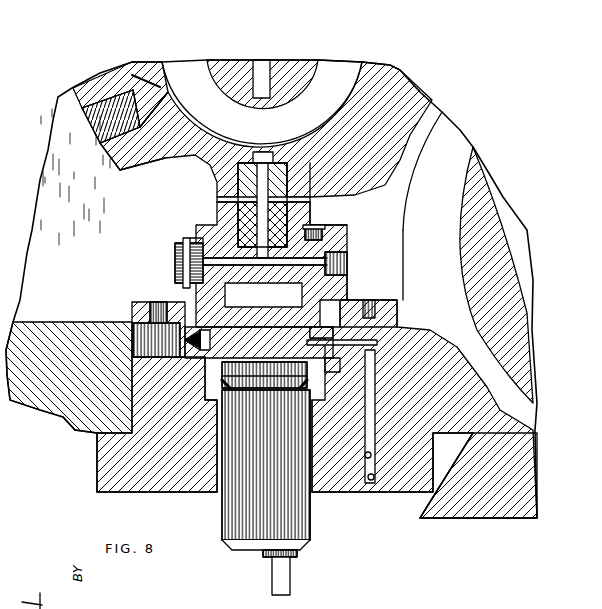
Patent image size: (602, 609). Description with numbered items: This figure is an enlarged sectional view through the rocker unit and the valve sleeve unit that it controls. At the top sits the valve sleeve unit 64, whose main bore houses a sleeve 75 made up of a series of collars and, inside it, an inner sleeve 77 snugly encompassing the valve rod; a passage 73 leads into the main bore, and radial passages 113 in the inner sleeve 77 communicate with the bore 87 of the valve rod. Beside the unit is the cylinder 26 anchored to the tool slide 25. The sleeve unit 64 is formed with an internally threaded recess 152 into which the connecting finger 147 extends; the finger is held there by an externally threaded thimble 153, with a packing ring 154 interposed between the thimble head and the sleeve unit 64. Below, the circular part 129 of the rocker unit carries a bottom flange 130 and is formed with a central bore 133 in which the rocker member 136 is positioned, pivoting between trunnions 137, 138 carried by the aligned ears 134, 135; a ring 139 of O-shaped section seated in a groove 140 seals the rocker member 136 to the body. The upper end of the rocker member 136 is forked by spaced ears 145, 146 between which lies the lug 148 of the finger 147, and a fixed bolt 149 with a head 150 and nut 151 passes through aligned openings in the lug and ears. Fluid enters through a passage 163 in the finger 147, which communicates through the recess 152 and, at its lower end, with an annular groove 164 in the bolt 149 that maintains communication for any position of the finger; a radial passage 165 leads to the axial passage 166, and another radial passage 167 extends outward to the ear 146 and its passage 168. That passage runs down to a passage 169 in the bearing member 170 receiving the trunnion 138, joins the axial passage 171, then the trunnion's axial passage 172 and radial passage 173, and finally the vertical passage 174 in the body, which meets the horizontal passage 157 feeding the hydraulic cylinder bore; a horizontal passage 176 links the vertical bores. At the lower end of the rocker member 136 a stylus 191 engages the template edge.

The tool slide 25 is at (482, 508).
The cylinder 26 is at (485, 168).
The valve sleeve unit 64 is at (368, 125).
The passage 73 is at (130, 60).
The sleeve 75 is at (343, 92).
The inner sleeve 77 is at (190, 132).
The bore 87 is at (253, 73).
The radial passages 113 is at (265, 68).
The circular part 129 is at (133, 388).
The bottom flange 130 is at (105, 463).
The central bore 133 is at (311, 485).
The ear 134 is at (138, 302).
The ear 135 is at (400, 292).
The rocker member 136 is at (266, 473).
The trunnion 137 is at (133, 345).
The trunnion 138 is at (398, 366).
The ring 139 is at (214, 410).
The groove 140 is at (278, 390).
The ear 145 is at (178, 241).
The ear 146 is at (325, 228).
The connecting finger 147 is at (288, 158).
The lug 148 is at (180, 298).
The bolt 149 is at (238, 265).
The head 150 is at (347, 230).
The nut 151 is at (183, 238).
The recess 152 is at (232, 152).
The thimble 153 is at (308, 210).
The packing ring 154 is at (220, 200).
The horizontal passage 157 is at (365, 455).
The passage 163 is at (238, 182).
The annular groove 164 is at (250, 310).
The radial passage 165 is at (232, 222).
The axial passage 166 is at (348, 248).
The radial passage 167 is at (336, 266).
The passage 168 is at (347, 285).
The passage 169 is at (300, 308).
The bearing member 170 is at (280, 322).
The axial passage 171 is at (318, 362).
The axial passage 172 is at (398, 306).
The radial passage 173 is at (380, 366).
The vertical passage 174 is at (367, 417).
The horizontal passage 176 is at (375, 477).
The stylus 191 is at (290, 575).